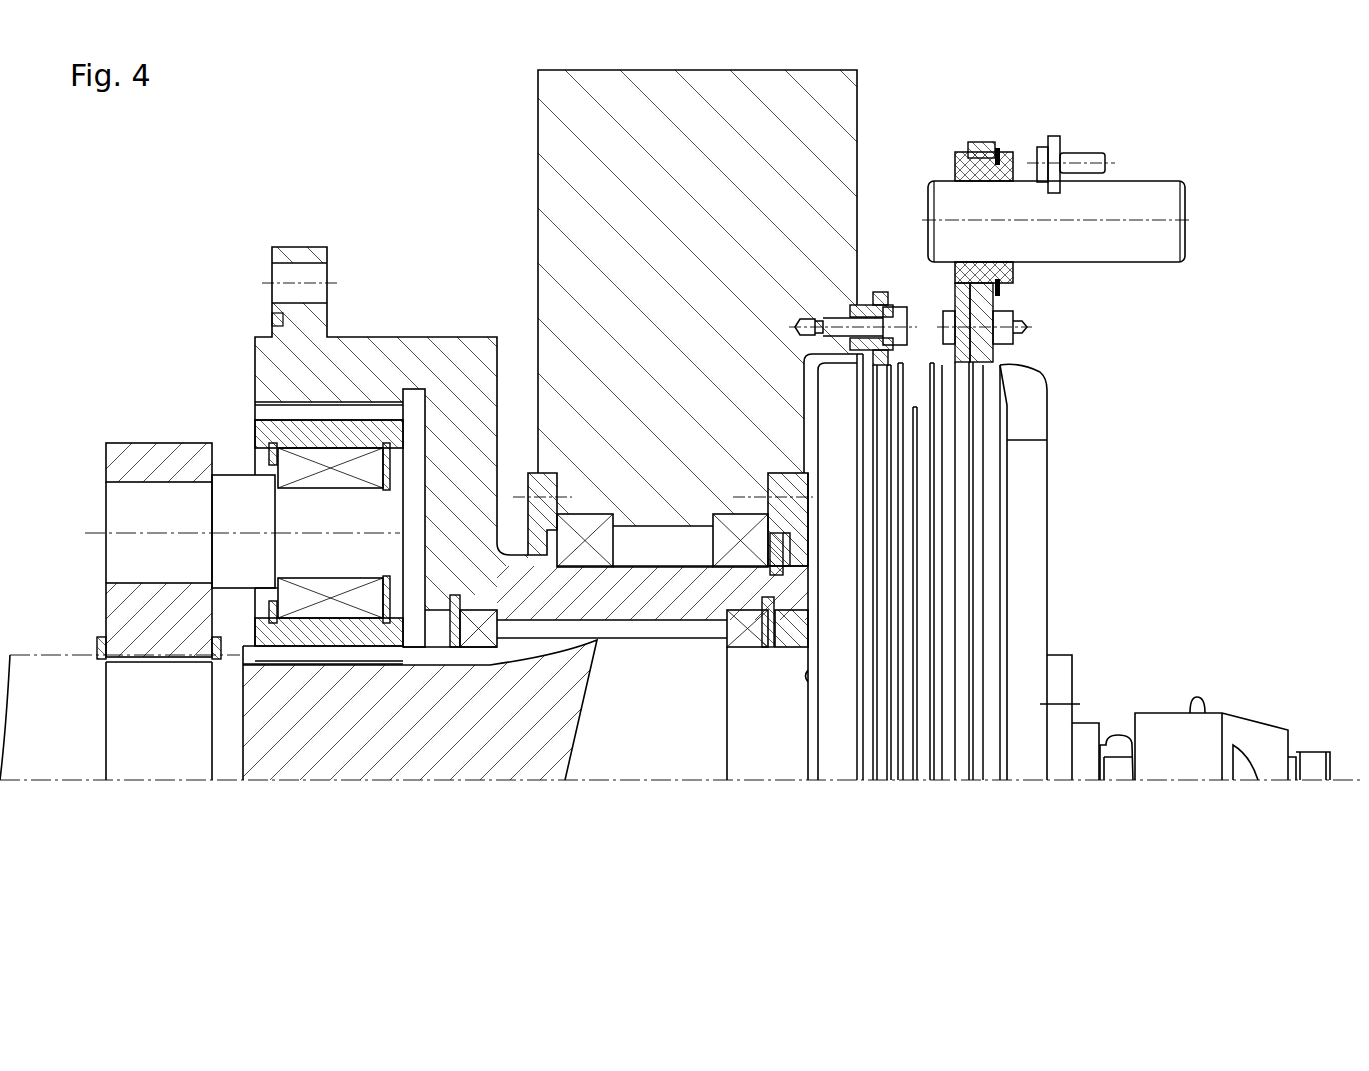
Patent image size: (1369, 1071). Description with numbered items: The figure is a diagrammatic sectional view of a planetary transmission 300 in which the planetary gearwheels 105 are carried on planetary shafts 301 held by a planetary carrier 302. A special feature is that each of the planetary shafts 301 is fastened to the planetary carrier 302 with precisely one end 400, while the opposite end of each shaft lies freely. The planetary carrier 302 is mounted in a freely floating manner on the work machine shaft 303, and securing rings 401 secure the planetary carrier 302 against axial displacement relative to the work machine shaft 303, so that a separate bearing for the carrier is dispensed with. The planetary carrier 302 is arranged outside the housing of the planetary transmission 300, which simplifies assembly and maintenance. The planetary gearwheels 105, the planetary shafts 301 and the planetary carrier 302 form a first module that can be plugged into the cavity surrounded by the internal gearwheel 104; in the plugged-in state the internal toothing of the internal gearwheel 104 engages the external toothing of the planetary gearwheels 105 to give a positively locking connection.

The planetary transmission 300 is at (978, 95).
The planetary shafts 301 is at (392, 502).
The planetary carrier 302 is at (120, 442).
The work machine shaft 303 is at (40, 758).
The end 400 is at (238, 473).
The securing rings 401 is at (385, 580).
The internal gearwheel 104 is at (257, 404).
The planetary gearwheels 105 is at (265, 428).